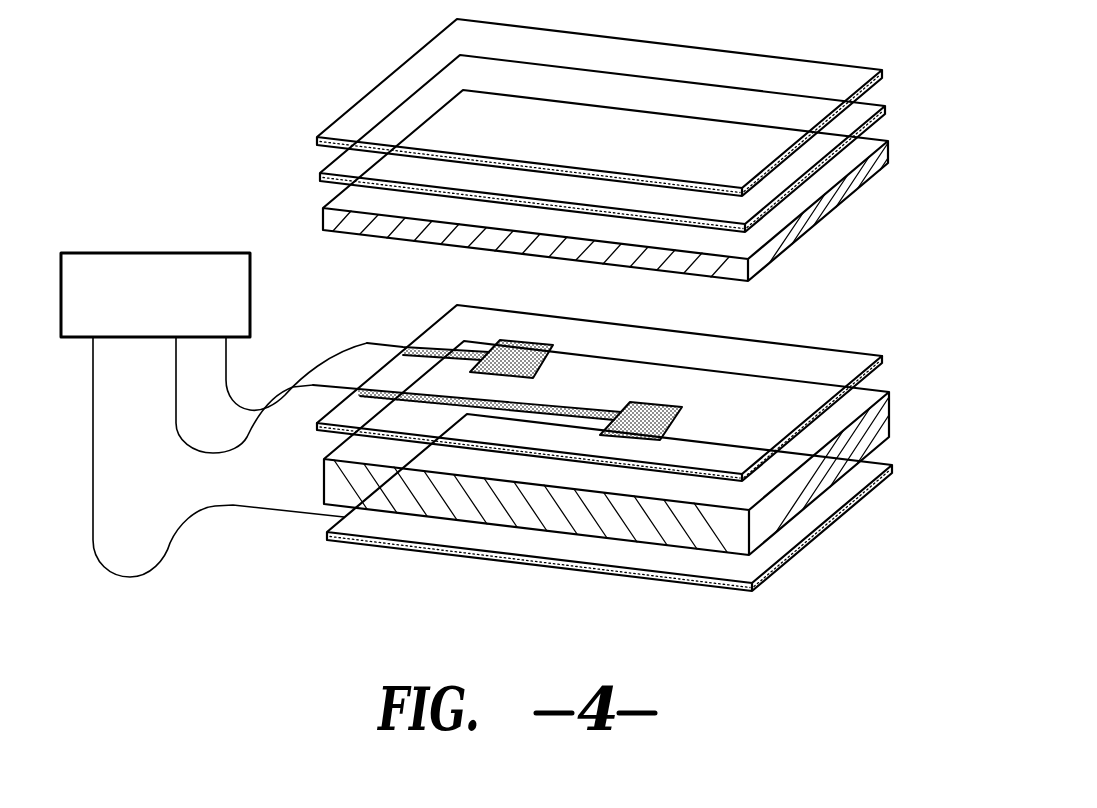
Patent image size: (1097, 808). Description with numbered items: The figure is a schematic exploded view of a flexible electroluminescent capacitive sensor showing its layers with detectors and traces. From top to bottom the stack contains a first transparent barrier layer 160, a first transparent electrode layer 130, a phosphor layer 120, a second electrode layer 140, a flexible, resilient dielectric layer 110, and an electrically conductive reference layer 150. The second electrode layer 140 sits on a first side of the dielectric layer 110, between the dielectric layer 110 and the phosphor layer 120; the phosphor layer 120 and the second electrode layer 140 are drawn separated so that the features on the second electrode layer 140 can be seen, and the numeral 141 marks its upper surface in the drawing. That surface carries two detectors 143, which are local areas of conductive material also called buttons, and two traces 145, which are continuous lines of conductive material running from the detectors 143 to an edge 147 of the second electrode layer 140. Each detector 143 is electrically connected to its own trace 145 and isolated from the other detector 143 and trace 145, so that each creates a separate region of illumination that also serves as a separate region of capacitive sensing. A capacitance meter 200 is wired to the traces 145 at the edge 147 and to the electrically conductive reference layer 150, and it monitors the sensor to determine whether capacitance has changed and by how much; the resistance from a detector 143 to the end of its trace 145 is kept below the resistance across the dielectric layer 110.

The dielectric layer 110 is at (887, 415).
The phosphor layer 120 is at (889, 154).
The first transparent electrode layer 130 is at (886, 104).
The second electrode layer 140 is at (630, 388).
The top surface of sensor plate 141 is at (767, 350).
The detector 143 is at (517, 343).
The trace 145 is at (453, 345).
The edge of the second electrode layer 147 is at (402, 348).
The electrically conductive reference layer 150 is at (890, 468).
The first transparent barrier layer 160 is at (882, 68).
The capacitance meter 200 is at (167, 252).